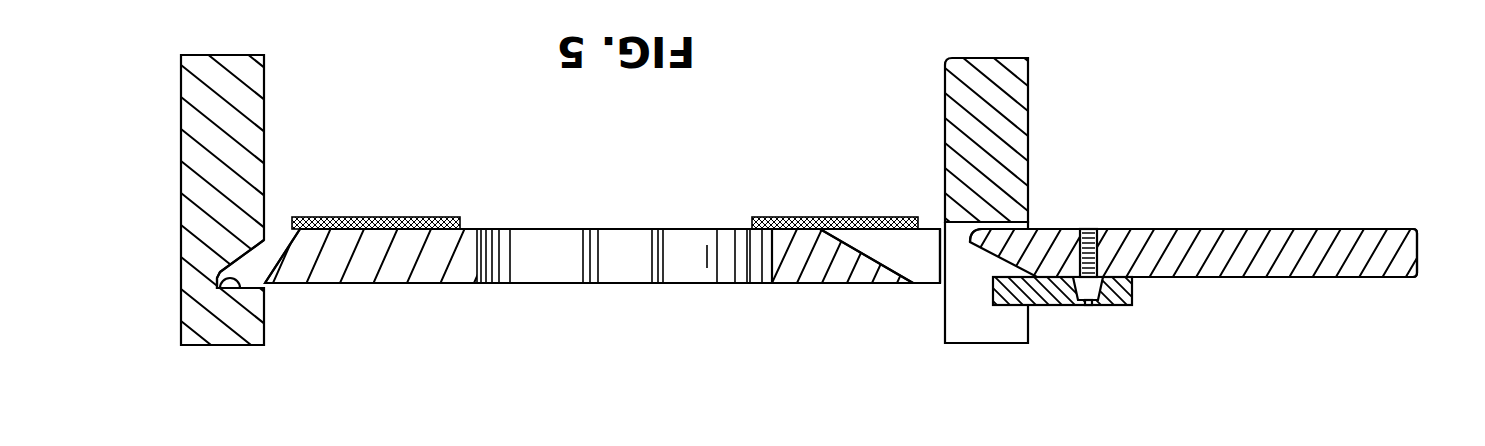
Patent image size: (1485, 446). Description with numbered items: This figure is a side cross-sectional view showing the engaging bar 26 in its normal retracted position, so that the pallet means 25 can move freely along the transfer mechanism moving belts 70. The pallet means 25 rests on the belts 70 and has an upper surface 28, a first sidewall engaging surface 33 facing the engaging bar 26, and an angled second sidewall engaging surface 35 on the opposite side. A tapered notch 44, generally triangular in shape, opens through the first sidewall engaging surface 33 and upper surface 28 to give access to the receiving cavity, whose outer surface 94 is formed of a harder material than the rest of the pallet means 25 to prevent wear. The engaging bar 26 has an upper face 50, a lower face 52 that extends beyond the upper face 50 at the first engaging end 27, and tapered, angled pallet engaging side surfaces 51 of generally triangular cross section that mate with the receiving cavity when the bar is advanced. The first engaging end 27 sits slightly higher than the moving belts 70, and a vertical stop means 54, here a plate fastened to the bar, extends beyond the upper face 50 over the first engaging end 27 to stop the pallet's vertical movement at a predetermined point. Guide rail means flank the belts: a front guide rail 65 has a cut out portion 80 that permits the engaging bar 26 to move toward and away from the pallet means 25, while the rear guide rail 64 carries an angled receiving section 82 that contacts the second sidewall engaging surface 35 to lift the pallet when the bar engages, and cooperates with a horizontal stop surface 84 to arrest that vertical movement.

The pallet means 25 is at (812, 283).
The engaging bar 26 is at (1375, 265).
The first engaging end 27 is at (975, 232).
The upper surface 28 is at (432, 285).
The first sidewall engaging surface 33 is at (940, 222).
The second sidewall engaging surface 35 is at (288, 250).
The tapered notch 44 is at (928, 268).
The upper face 50 is at (1310, 278).
The pallet engaging side surfaces 51 is at (1075, 252).
The lower face 52 is at (1230, 228).
The vertical stop means 54 is at (1010, 308).
The rear guide rail 64 is at (181, 156).
The front guide rail 65 is at (1030, 180).
The transfer mechanism moving belts 70 is at (437, 217).
The cut out portion 80 is at (953, 328).
The angled receiving section 82 is at (247, 258).
The stop surface 84 is at (222, 276).
The outer surface of receiving cavity 94 is at (890, 247).